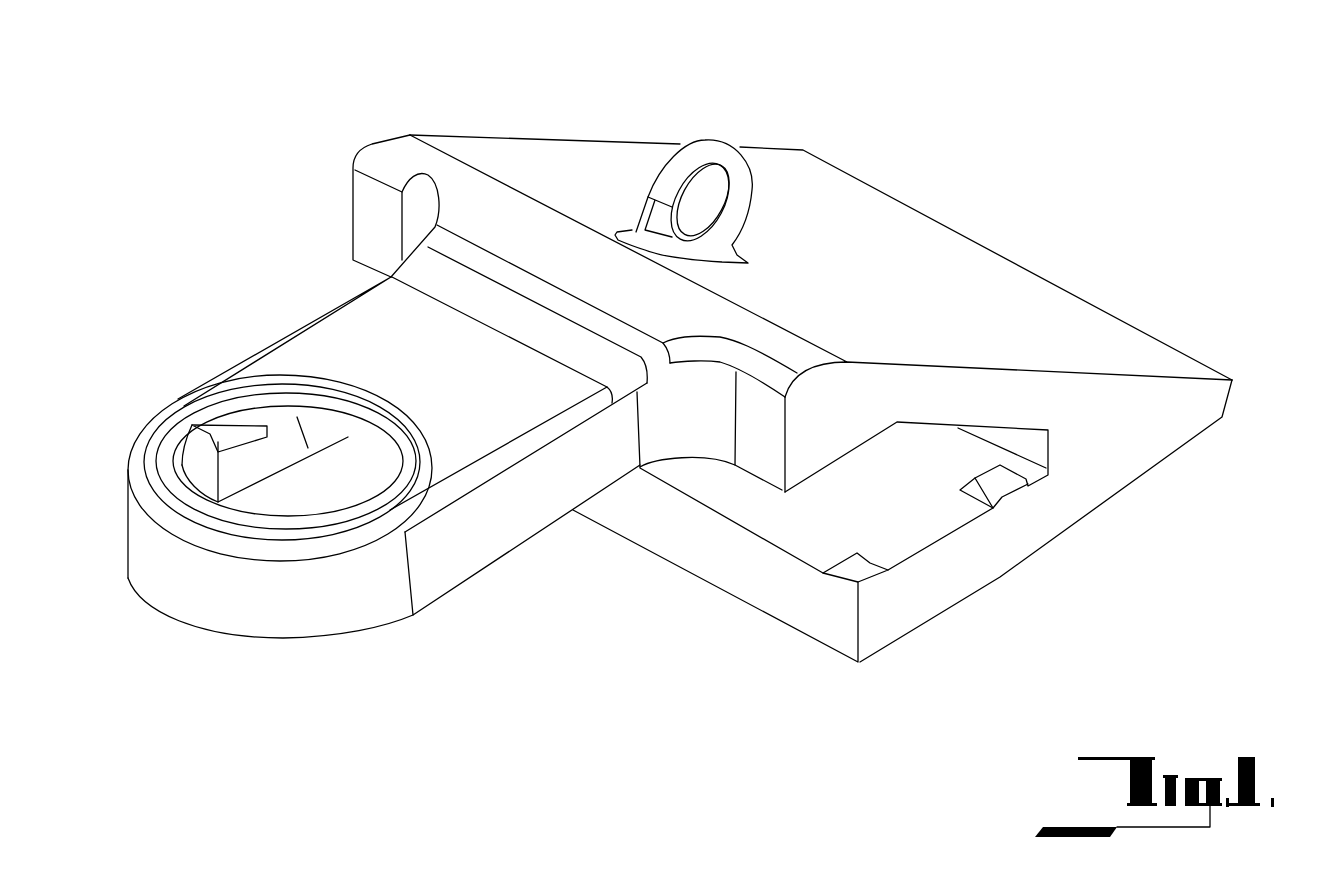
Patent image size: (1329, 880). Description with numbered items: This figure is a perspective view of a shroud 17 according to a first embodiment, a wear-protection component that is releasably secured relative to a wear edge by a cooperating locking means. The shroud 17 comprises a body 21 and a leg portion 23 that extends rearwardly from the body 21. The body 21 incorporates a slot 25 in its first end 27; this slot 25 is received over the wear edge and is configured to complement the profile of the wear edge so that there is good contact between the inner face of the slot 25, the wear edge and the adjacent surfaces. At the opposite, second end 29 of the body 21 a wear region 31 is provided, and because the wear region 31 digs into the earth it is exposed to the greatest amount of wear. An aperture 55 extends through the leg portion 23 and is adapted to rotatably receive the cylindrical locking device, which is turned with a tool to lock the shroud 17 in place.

The shroud 17 is at (983, 123).
The wear region 31 is at (1048, 330).
The second end 29 is at (1147, 422).
The first end 27 is at (808, 442).
The body 21 is at (885, 608).
The slot 25 is at (905, 505).
The leg portion 23 is at (380, 592).
The aperture 55 is at (278, 492).